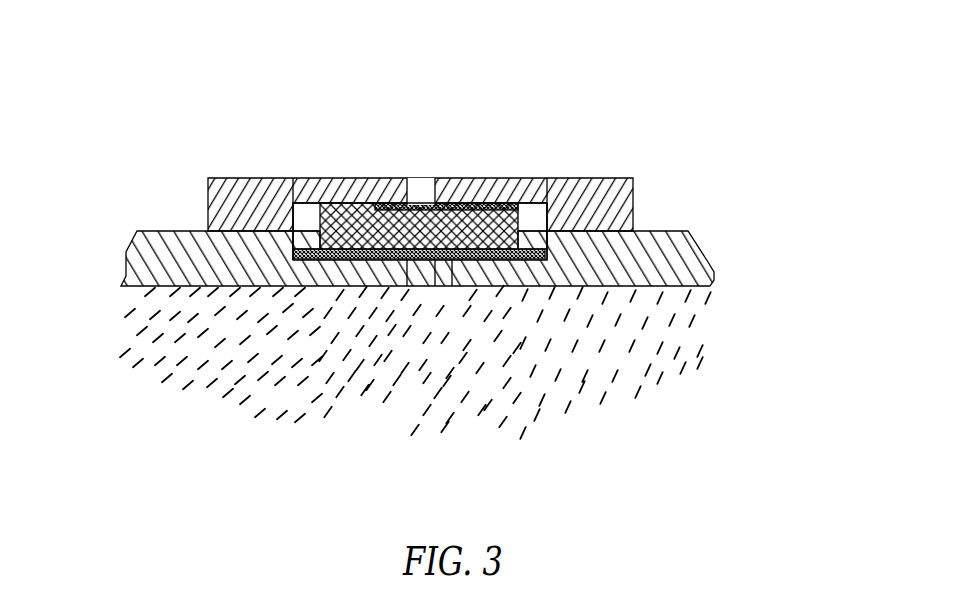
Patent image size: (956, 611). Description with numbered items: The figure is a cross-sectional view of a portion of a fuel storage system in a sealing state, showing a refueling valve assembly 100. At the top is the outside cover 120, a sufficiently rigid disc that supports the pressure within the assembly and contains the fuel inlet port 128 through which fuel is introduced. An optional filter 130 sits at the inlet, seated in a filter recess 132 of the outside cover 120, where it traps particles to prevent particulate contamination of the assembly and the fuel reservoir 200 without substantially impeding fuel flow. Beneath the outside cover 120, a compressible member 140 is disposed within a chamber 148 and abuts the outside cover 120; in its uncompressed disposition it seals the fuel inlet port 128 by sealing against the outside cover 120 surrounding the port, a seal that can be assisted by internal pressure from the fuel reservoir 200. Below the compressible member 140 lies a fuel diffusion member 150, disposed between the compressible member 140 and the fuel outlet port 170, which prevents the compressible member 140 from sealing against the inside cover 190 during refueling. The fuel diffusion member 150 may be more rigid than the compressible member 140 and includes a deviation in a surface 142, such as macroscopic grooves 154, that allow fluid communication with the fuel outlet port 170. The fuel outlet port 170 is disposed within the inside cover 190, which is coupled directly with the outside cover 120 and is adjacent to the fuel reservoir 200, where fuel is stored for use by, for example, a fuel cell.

The refueling valve assembly 100 is at (645, 163).
The outside cover 120 is at (633, 203).
The fuel inlet port 128 is at (423, 180).
The filter 130 is at (420, 178).
The filter recess 132 is at (452, 205).
The compressible member 140 is at (312, 222).
The surface 142 is at (493, 282).
The chamber 148 is at (530, 215).
The fuel diffusion member 150 is at (300, 234).
The grooves 154 is at (450, 287).
The fuel outlet port 170 is at (420, 288).
The inside cover 190 is at (706, 258).
The fuel reservoir 200 is at (493, 370).